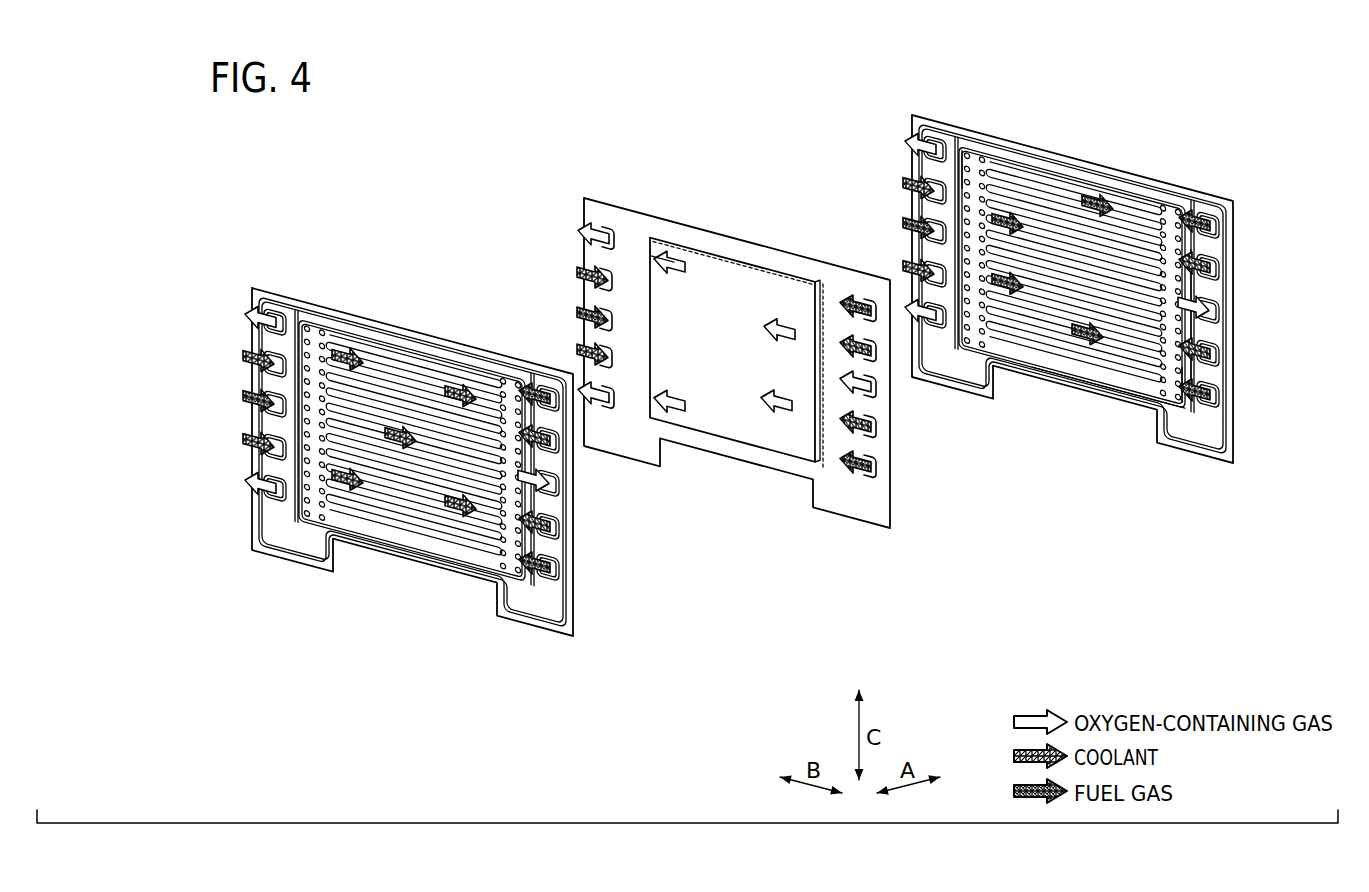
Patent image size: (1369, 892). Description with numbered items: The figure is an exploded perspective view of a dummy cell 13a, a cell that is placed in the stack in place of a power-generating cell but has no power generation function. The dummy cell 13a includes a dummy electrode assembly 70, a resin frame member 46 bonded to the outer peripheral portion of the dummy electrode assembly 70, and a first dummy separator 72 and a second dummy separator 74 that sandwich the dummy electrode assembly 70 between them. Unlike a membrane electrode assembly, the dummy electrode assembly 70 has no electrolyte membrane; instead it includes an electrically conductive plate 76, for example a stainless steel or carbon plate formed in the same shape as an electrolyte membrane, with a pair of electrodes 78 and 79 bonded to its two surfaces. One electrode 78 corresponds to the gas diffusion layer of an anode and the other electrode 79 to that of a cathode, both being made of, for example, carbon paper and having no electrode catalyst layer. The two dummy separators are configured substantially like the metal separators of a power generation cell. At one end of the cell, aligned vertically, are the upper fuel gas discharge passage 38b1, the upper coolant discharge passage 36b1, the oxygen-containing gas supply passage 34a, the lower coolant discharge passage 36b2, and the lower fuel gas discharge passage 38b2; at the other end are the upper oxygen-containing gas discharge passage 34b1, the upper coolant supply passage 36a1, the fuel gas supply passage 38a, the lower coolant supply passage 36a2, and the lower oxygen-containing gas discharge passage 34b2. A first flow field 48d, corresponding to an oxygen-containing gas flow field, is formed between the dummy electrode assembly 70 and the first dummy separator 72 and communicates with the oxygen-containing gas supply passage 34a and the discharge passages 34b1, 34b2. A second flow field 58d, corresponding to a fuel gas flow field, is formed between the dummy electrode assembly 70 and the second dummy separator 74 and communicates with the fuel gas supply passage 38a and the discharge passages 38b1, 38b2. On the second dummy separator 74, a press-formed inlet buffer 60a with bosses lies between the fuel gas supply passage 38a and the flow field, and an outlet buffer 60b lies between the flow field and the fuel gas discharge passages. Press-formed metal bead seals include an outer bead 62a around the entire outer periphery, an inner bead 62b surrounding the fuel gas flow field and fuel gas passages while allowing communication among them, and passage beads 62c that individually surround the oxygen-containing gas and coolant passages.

The dummy cell 13a is at (548, 192).
The first dummy separator 72 is at (334, 306).
The second dummy separator 74 is at (908, 134).
The first flow field 48d is at (440, 390).
The second flow field 58d is at (1032, 173).
The resin frame member 46 is at (638, 226).
The dummy electrode assembly 70 is at (730, 250).
The plate 76 is at (745, 282).
The electrode 78 is at (678, 240).
The electrode 79 is at (698, 262).
The oxygen-containing gas supply passage 34a is at (556, 490).
The upper oxygen-containing gas discharge passage 34b1 is at (278, 322).
The lower oxygen-containing gas discharge passage 34b2 is at (292, 500).
The upper coolant supply passage 36a1 is at (265, 358).
The lower coolant supply passage 36a2 is at (268, 440).
The upper coolant discharge passage 36b1 is at (556, 447).
The lower coolant discharge passage 36b2 is at (560, 530).
The fuel gas supply passage 38a is at (268, 398).
The upper fuel gas discharge passage 38b1 is at (548, 388).
The lower fuel gas discharge passage 38b2 is at (550, 580).
The inlet buffer 60a is at (975, 155).
The outlet buffer 60b is at (1162, 373).
The outer bead 62a is at (1163, 443).
The inner bead 62b is at (1093, 383).
The passage beads 62c is at (1165, 277).